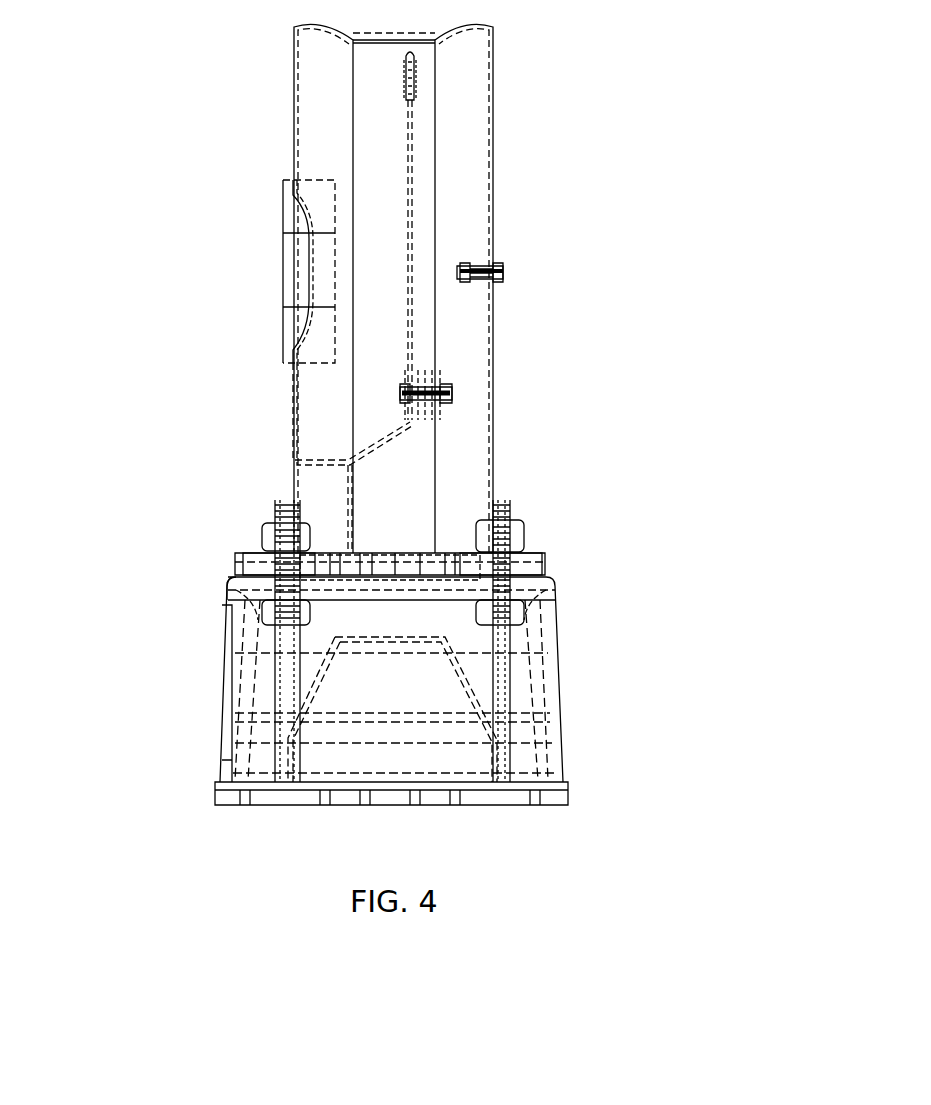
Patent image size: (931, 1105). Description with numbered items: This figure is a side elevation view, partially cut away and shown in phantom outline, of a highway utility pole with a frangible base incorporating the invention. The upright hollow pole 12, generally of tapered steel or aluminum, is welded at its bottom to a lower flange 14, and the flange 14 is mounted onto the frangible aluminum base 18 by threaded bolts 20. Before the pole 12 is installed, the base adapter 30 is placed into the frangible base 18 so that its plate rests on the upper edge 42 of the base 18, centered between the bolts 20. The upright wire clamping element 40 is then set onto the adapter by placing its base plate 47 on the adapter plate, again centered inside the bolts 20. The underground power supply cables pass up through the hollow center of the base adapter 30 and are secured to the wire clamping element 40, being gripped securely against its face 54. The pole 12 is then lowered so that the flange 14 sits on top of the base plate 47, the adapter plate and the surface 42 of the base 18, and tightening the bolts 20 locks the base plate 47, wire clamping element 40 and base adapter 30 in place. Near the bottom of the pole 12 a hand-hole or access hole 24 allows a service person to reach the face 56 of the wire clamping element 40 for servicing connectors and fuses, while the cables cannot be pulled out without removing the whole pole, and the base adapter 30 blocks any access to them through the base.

The pole 12 is at (496, 197).
The lower flange 14 is at (546, 562).
The frangible base 18 is at (560, 633).
The threaded bolts 20 is at (516, 520).
The access hole 24 is at (288, 272).
The base adapter 30 is at (312, 681).
The wire clamping element 40 is at (409, 136).
The upper edge 42 is at (235, 575).
The base plate 47 is at (393, 572).
The face 54 is at (420, 203).
The face 56 is at (402, 250).